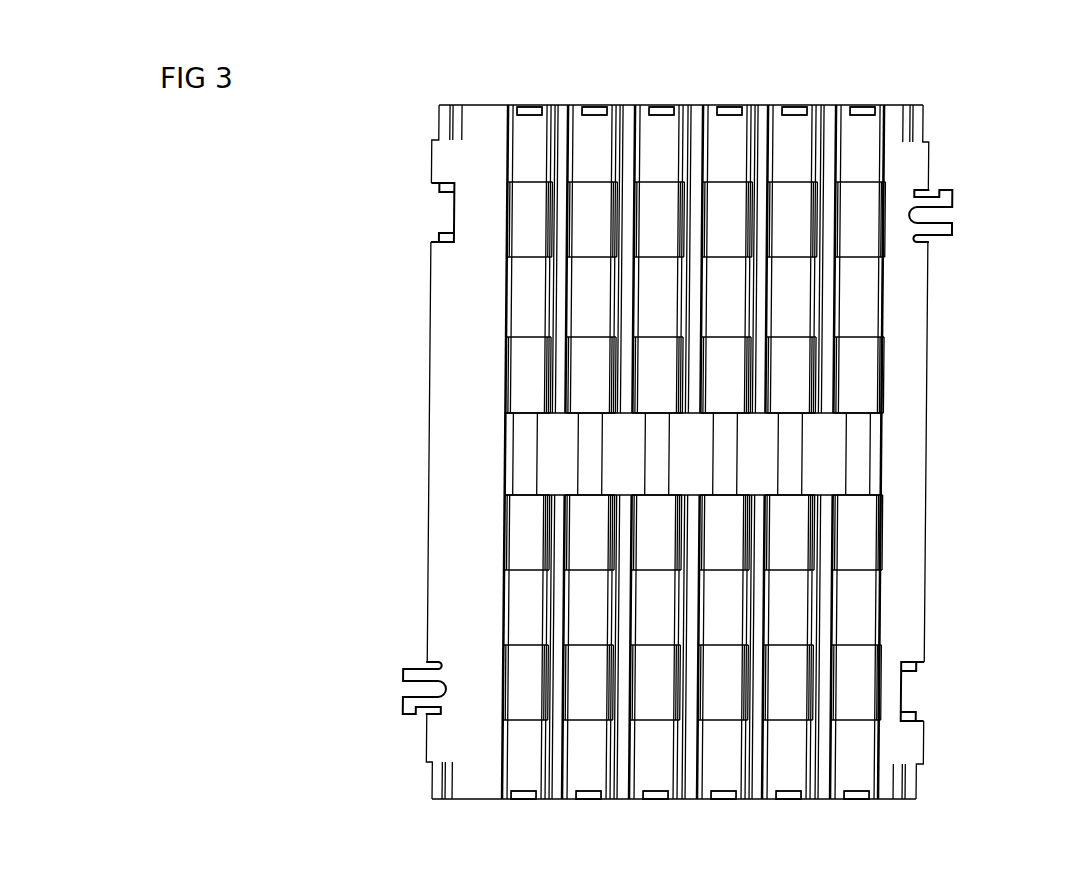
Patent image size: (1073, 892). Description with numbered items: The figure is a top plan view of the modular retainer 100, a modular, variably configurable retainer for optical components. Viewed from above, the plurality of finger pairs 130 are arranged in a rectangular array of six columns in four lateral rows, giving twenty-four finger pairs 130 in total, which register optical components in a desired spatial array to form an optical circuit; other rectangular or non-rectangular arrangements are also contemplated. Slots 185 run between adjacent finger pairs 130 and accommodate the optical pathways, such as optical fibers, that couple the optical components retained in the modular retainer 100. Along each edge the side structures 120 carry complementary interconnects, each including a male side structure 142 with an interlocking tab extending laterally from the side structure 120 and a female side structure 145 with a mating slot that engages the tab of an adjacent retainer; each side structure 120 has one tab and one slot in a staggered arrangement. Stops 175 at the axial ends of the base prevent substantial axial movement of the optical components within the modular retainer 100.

The modular retainer 100 is at (1052, 168).
The side structures 120 is at (455, 441).
The finger pairs 130 is at (547, 245).
The male side structure 142 is at (945, 232).
The female side structure 145 is at (445, 205).
The stops 175 is at (593, 107).
The slots 185 is at (763, 107).